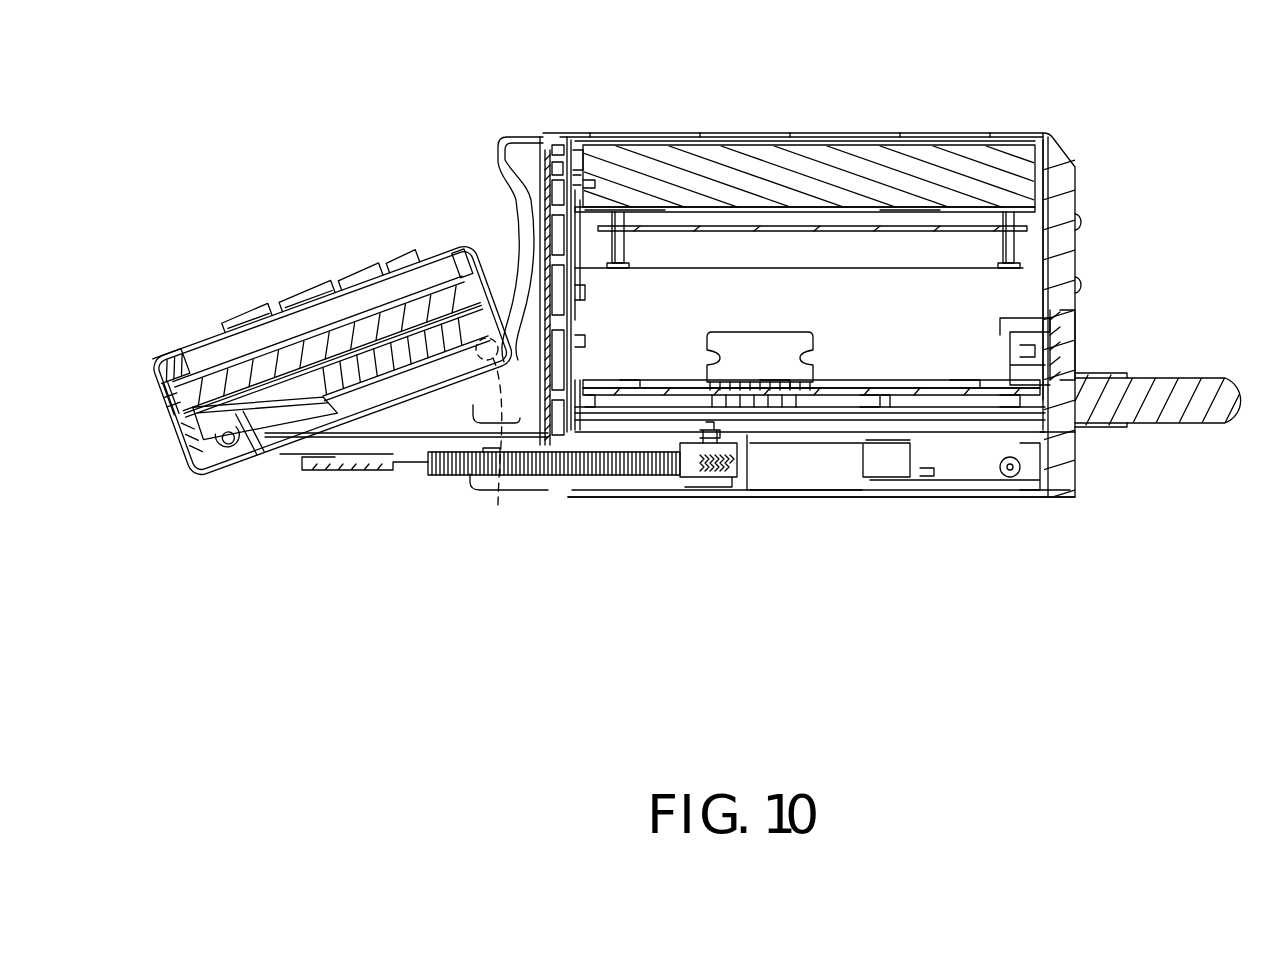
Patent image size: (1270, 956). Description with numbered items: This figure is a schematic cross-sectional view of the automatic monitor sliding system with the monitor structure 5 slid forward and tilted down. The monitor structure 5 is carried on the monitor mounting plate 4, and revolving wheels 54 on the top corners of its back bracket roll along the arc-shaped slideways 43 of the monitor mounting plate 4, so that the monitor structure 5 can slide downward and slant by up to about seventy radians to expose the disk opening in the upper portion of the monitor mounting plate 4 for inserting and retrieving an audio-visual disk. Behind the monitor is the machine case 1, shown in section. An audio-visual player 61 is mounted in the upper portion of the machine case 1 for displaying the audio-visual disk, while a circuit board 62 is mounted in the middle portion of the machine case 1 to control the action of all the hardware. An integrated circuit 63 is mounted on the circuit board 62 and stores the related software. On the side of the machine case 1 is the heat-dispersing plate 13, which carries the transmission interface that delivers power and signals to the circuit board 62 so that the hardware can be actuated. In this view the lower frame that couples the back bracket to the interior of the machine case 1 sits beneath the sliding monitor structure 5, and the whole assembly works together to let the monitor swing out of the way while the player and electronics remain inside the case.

The machine case 1 is at (956, 108).
The monitor mounting plate 4 is at (540, 127).
The monitor structure 5 is at (295, 272).
The heat-dispersing plate 13 is at (1055, 182).
The arc-shaped slideway 43 is at (530, 190).
The revolving wheel 54 is at (498, 505).
The audio-visual player 61 is at (720, 162).
The circuit board 62 is at (915, 385).
The integrated circuit 63 is at (762, 340).